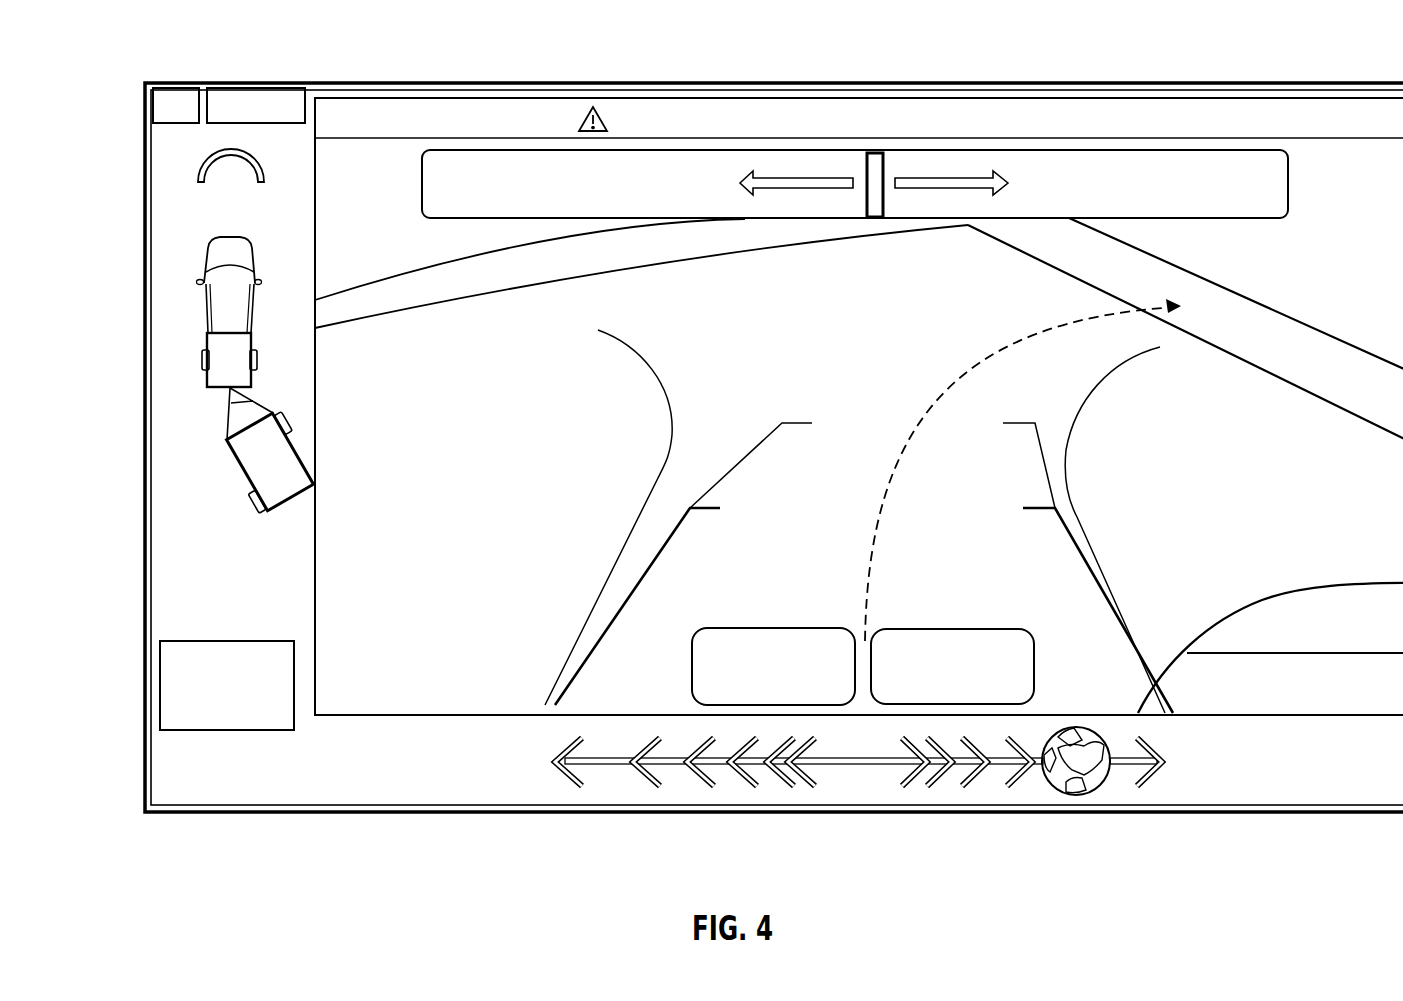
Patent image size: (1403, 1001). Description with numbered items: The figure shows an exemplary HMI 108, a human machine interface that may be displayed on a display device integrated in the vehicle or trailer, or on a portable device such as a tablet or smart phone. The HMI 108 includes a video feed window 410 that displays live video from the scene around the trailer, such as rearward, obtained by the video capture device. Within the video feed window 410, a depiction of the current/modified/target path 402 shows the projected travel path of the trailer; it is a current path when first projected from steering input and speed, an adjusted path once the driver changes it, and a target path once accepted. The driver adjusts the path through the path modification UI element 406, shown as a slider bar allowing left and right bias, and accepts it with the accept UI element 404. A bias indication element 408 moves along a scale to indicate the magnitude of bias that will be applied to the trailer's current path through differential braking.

The HMI 108 is at (446, 56).
The current/modified/target path 402 is at (1041, 331).
The accept UI element 404 is at (901, 689).
The path modification UI element 406 is at (889, 200).
The bias indication element 408 is at (1083, 780).
The video feed window 410 is at (198, 175).